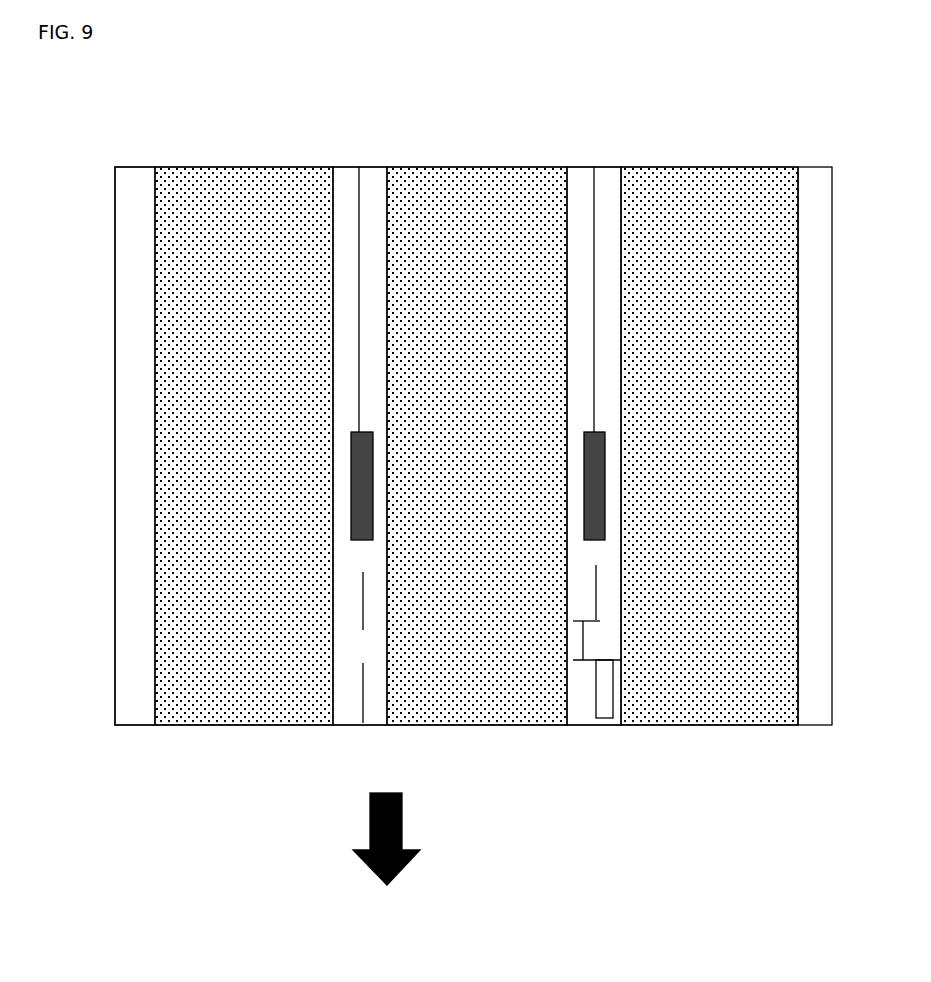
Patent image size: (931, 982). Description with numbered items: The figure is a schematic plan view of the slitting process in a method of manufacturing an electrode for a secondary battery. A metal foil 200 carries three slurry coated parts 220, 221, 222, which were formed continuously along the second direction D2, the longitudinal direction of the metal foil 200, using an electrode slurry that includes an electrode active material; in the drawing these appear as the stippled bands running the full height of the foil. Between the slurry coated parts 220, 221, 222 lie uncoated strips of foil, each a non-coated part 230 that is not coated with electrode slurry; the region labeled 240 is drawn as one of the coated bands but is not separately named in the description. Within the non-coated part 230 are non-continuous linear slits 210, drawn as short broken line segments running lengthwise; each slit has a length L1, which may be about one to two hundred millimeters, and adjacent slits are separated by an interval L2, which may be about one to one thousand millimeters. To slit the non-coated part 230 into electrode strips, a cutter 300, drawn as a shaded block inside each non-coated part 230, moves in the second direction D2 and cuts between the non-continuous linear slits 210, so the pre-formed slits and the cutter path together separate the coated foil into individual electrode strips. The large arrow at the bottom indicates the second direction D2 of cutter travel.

The metal foil 200 is at (126, 167).
The non-continuous linear slits 210 is at (362, 698).
The slurry coated part 220 is at (150, 278).
The slurry coated part 221 is at (388, 292).
The slurry coated part 222 is at (620, 287).
The non-coated part 230 is at (383, 192).
The third region 240 is at (472, 195).
The cutter 300 is at (352, 475).
The length of non-continuous linear slit L1 is at (612, 697).
The interval between non-continuous linear slits L2 is at (583, 642).
The second direction D2 is at (370, 827).